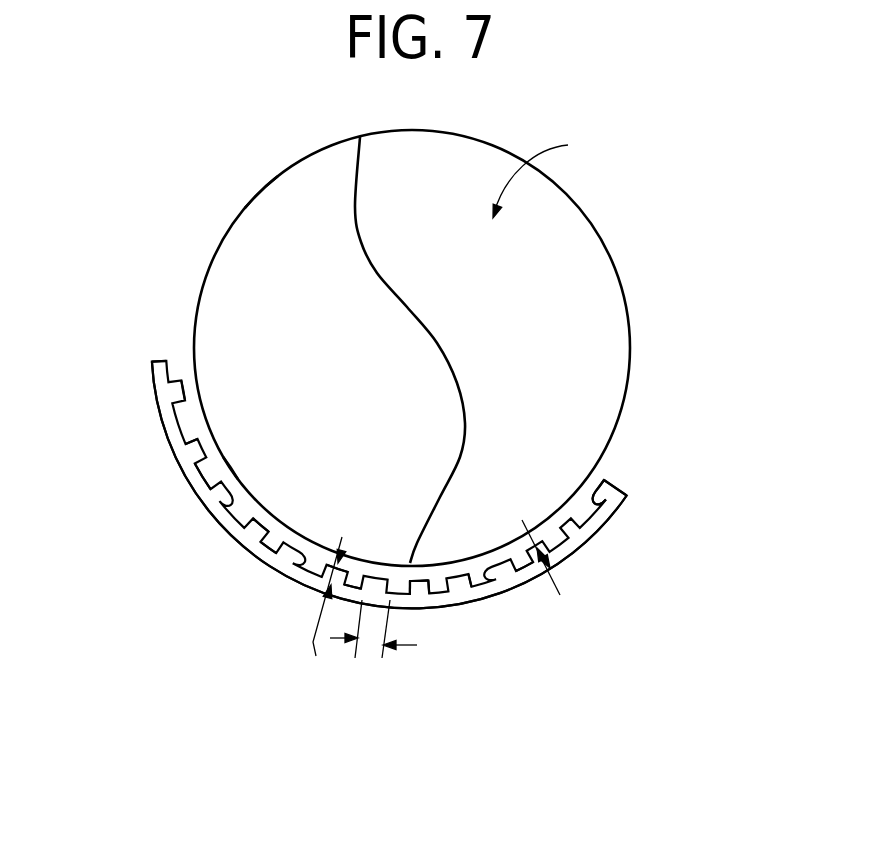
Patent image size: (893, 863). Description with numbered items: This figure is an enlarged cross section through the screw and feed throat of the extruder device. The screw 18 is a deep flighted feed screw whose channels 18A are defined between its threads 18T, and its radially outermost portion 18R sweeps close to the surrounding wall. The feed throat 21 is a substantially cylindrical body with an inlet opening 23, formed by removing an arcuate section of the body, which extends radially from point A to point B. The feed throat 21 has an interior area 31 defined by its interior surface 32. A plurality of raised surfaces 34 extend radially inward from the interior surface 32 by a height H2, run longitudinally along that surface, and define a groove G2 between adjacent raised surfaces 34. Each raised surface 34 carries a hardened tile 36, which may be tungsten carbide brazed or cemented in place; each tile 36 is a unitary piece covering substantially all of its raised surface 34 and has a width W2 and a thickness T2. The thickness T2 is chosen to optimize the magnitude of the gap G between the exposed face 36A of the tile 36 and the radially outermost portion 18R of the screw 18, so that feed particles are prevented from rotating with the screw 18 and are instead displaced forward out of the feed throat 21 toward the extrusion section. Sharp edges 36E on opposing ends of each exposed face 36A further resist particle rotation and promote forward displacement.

The screw 18 is at (584, 304).
The radially outermost portion of the screw 18R is at (258, 195).
The threads 18T is at (358, 220).
The channels 18A is at (554, 171).
The inlet opening 23 is at (160, 300).
The interior area 31 is at (158, 336).
The feed throat 21 is at (421, 600).
The interior surface 32 is at (357, 585).
The raised surfaces 34 is at (202, 440).
The hardened tile 36 is at (229, 525).
The exposed face 36A is at (199, 434).
The sharp edges 36E is at (602, 488).
The point A is at (150, 364).
The point B is at (623, 488).
The gap G is at (228, 434).
The groove G2 is at (183, 410).
The height H2 is at (565, 596).
The thickness T2 is at (326, 611).
The width W2 is at (417, 645).